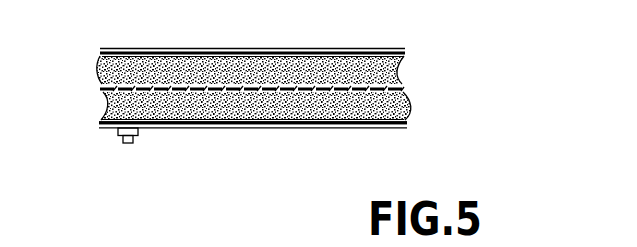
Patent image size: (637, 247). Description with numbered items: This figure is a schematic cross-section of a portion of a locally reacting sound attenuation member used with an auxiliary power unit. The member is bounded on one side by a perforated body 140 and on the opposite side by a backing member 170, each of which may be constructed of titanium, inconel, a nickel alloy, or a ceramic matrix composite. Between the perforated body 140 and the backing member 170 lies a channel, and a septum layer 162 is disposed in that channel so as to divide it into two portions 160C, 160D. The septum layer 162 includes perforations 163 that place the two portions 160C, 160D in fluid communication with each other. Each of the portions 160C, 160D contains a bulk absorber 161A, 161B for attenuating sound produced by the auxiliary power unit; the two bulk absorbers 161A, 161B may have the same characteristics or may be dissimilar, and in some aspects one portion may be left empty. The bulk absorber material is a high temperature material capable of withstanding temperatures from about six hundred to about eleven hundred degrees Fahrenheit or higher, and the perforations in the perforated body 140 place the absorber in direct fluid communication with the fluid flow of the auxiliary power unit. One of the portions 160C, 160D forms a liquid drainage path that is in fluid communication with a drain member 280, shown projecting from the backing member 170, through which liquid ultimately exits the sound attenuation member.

The perforated body 140 is at (177, 49).
The bulk absorber 161A is at (310, 58).
The channel portion 160C is at (399, 73).
The channel portion 160D is at (399, 115).
The bulk absorber 161B is at (307, 110).
The septum layer 162 is at (181, 124).
The perforations 163 is at (222, 124).
The backing member 170 is at (367, 129).
The drain member 280 is at (126, 147).